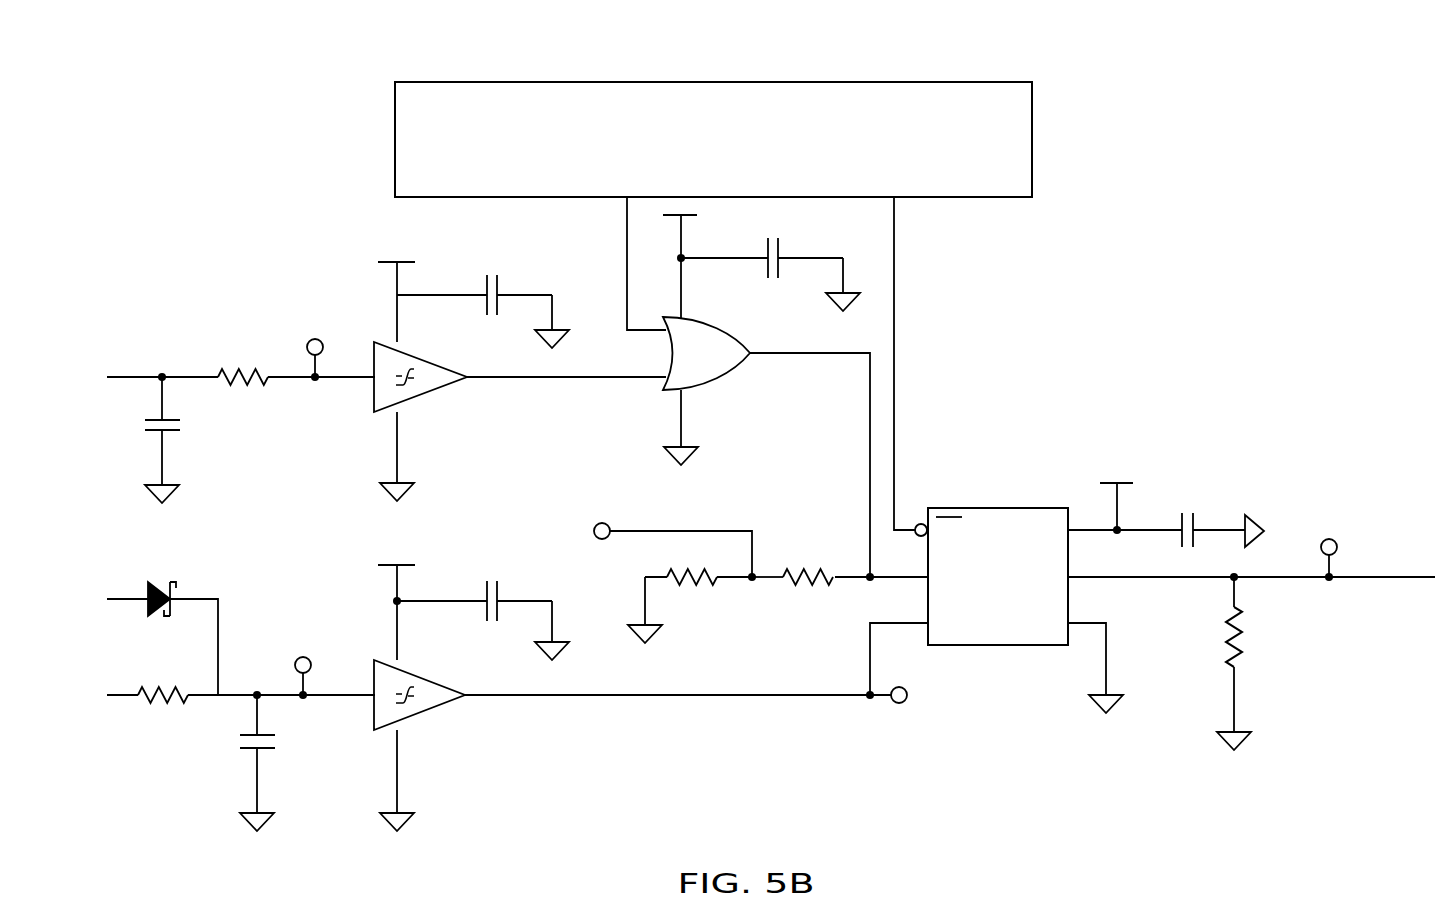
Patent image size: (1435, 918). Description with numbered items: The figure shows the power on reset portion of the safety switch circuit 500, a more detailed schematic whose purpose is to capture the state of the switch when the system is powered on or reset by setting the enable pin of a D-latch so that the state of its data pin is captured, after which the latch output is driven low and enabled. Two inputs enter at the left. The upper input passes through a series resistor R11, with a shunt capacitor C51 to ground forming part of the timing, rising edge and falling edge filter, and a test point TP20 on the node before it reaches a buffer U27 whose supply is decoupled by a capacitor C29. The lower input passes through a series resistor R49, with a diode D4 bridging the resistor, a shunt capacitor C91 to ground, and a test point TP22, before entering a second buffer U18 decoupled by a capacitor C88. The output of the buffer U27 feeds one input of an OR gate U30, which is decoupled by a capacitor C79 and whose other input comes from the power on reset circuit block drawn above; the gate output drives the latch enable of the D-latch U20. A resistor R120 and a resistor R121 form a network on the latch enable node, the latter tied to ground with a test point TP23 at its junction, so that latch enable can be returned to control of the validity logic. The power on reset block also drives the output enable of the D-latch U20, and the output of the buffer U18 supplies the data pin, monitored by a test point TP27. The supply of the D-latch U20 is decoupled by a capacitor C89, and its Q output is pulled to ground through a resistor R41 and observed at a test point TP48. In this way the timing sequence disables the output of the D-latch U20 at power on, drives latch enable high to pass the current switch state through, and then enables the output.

The safety switch circuit 500 is at (312, 112).
The resistor R11 is at (241, 379).
The test point TP20 is at (315, 340).
The capacitor C51 is at (140, 457).
The Schmitt trigger buffer U27 is at (476, 400).
The capacitor C29 is at (498, 300).
The OR gate U30 is at (741, 360).
The capacitor C79 is at (771, 274).
The test point TP23 is at (649, 548).
The resistor R121 is at (690, 605).
The resistor R120 is at (801, 583).
The D-latch U20 is at (1017, 600).
The test point TP27 is at (921, 703).
The capacitor C89 is at (1212, 520).
The test point TP48 is at (1335, 536).
The resistor R41 is at (1214, 681).
The Schmitt trigger buffer U18 is at (495, 717).
The capacitor C88 is at (494, 621).
The Schottky diode D4 is at (155, 597).
The resistor R49 is at (161, 699).
The test point TP22 is at (302, 659).
The capacitor C91 is at (281, 782).